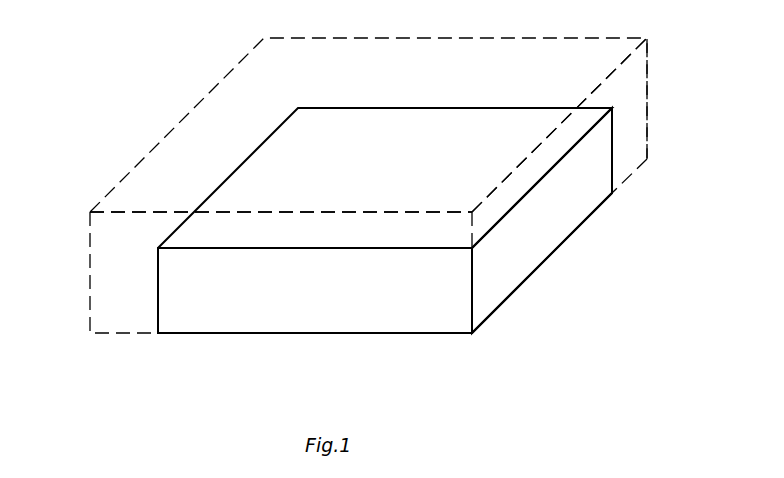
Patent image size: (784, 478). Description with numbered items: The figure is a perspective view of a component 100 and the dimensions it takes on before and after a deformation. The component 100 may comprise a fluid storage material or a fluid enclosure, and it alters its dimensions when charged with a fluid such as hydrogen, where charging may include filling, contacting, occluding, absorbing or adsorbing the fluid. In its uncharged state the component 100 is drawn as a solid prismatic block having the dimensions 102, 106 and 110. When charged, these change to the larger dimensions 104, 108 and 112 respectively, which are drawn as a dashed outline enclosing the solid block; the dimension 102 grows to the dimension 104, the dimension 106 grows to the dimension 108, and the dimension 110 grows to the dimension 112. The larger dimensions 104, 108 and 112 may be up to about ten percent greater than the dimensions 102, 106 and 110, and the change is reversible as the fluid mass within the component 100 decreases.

The component 100 is at (134, 47).
The dimension 102 is at (158, 291).
The larger dimension 104 is at (89, 272).
The dimension 106 is at (313, 250).
The larger dimension 108 is at (350, 212).
The dimension 110 is at (542, 263).
The larger dimension 112 is at (636, 82).